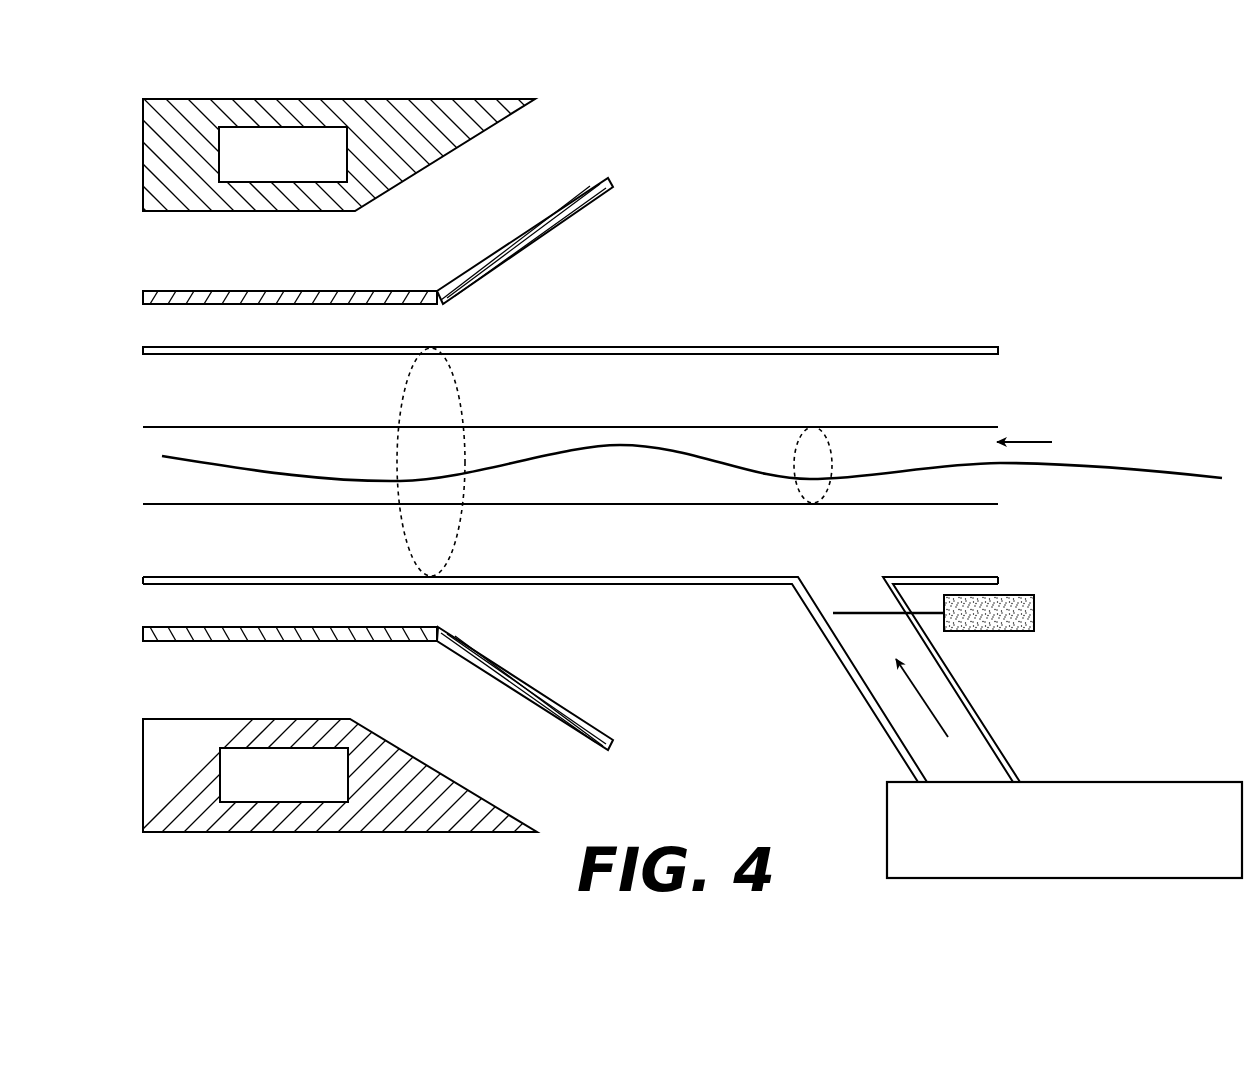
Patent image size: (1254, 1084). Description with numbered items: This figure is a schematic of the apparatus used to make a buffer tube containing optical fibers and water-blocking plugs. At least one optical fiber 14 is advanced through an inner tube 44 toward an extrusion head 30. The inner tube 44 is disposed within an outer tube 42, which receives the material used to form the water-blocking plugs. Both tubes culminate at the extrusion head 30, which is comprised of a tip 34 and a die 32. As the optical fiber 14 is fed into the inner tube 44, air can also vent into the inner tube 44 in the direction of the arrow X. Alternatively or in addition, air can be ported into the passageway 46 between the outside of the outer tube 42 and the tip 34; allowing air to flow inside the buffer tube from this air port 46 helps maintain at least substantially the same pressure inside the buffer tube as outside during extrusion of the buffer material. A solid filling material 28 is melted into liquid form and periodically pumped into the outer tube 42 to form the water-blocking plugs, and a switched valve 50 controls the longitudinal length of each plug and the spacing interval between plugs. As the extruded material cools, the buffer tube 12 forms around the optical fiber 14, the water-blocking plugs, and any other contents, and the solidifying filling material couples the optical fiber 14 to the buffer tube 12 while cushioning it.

The buffer tube 12 is at (429, 218).
The optical fiber 14 is at (1075, 472).
The solid filling material 28 is at (1078, 843).
The extrusion head 30 is at (168, 141).
The die 32 is at (298, 169).
The tip 34 is at (157, 297).
The outer tube 42 is at (469, 410).
The inner tube 44 is at (828, 421).
The passageway 46 is at (512, 325).
The switched valve 50 is at (1020, 623).
The direction of air venting X is at (1042, 443).